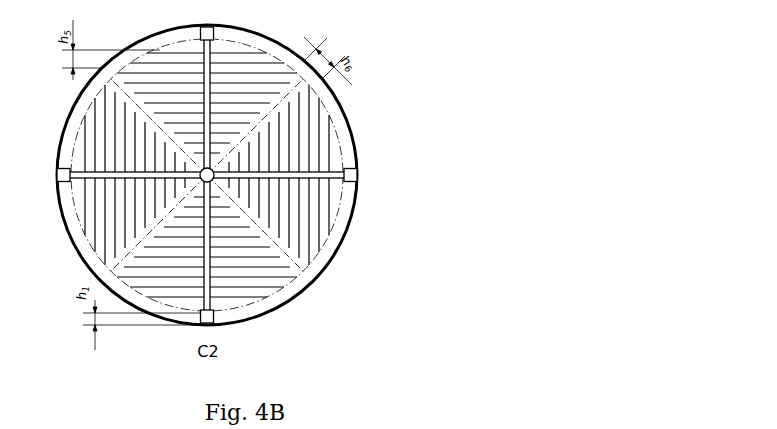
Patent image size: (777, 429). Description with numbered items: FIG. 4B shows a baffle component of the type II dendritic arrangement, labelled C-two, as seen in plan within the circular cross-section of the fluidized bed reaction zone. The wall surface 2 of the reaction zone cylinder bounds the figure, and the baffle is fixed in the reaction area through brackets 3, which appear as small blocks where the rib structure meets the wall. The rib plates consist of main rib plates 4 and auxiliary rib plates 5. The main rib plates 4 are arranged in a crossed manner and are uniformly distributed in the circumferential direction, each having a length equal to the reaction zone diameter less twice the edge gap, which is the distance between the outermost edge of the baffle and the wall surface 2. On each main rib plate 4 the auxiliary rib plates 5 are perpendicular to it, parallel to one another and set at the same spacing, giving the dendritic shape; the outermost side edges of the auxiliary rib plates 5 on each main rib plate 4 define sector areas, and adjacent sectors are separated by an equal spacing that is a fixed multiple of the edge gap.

The wall surface 2 is at (348, 123).
The bracket 3 is at (358, 170).
The main rib plate 4 is at (300, 190).
The auxiliary rib plate 5 is at (340, 186).